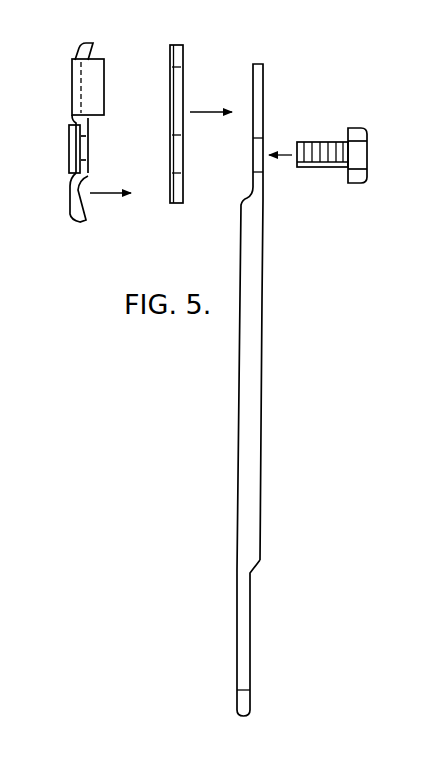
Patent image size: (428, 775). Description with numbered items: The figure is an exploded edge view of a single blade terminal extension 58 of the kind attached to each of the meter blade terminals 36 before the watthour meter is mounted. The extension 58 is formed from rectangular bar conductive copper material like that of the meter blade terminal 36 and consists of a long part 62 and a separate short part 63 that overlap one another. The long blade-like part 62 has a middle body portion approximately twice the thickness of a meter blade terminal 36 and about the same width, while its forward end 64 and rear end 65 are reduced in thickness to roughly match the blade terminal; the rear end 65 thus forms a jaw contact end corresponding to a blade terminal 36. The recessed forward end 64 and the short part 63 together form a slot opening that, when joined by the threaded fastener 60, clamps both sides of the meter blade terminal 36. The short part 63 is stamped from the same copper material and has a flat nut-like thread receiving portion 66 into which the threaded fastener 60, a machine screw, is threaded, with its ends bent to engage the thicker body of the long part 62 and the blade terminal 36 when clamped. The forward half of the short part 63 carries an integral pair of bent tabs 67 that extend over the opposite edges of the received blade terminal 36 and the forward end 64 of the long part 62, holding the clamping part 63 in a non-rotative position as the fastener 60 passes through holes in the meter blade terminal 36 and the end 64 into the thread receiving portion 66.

The meter blade terminal 36 is at (182, 65).
The blade terminal extension 58 is at (310, 359).
The threaded fastener 60 is at (329, 143).
The long part 62 is at (253, 290).
The short part 63 is at (76, 123).
The forward end 64 is at (257, 97).
The rear end 65 is at (243, 660).
The thread receiving portion 66 is at (74, 178).
The bent tabs 67 is at (95, 63).